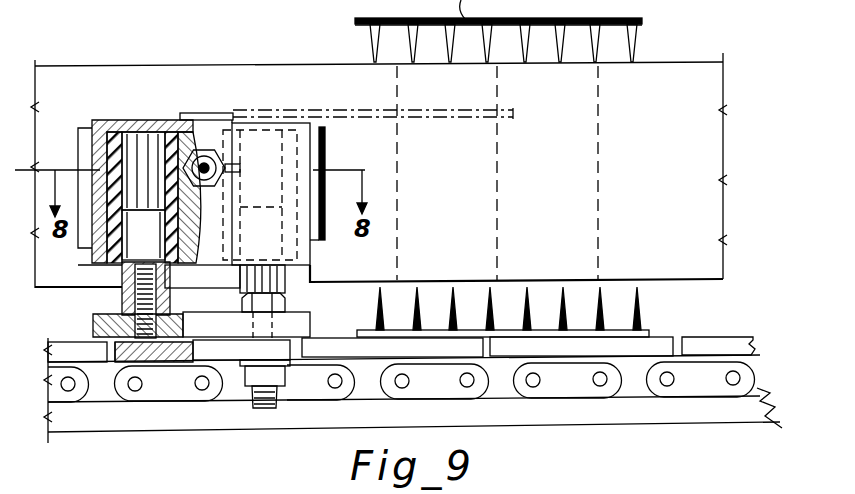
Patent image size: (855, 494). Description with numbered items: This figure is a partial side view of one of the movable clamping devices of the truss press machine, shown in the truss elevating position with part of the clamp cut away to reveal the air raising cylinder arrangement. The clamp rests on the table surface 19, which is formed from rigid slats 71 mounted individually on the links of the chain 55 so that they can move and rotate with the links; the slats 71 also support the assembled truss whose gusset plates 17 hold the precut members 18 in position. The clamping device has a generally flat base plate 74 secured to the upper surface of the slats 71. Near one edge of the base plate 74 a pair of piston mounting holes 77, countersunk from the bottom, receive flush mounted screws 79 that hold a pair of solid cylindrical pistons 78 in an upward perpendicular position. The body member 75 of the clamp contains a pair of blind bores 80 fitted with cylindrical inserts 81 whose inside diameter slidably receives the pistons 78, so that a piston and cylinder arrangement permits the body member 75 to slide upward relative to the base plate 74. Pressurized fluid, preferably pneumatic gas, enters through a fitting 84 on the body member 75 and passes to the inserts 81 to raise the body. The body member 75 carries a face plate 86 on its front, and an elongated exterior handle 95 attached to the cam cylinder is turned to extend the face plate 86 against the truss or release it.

The gusset plate 17 is at (640, 322).
The precut member 18 is at (703, 72).
The table surface 19 is at (727, 335).
The chain 55 is at (713, 378).
The slat 71 is at (714, 338).
The base plate 74 is at (310, 321).
The body member 75 is at (97, 120).
The piston mounting hole 77 is at (117, 322).
The piston 78 is at (67, 292).
The flush mounted screw 79 is at (168, 300).
The blind bore 80 is at (98, 247).
The cylindrical insert 81 is at (103, 267).
The fitting 84 is at (203, 152).
The face plate 86 is at (323, 220).
The handle 95 is at (192, 112).